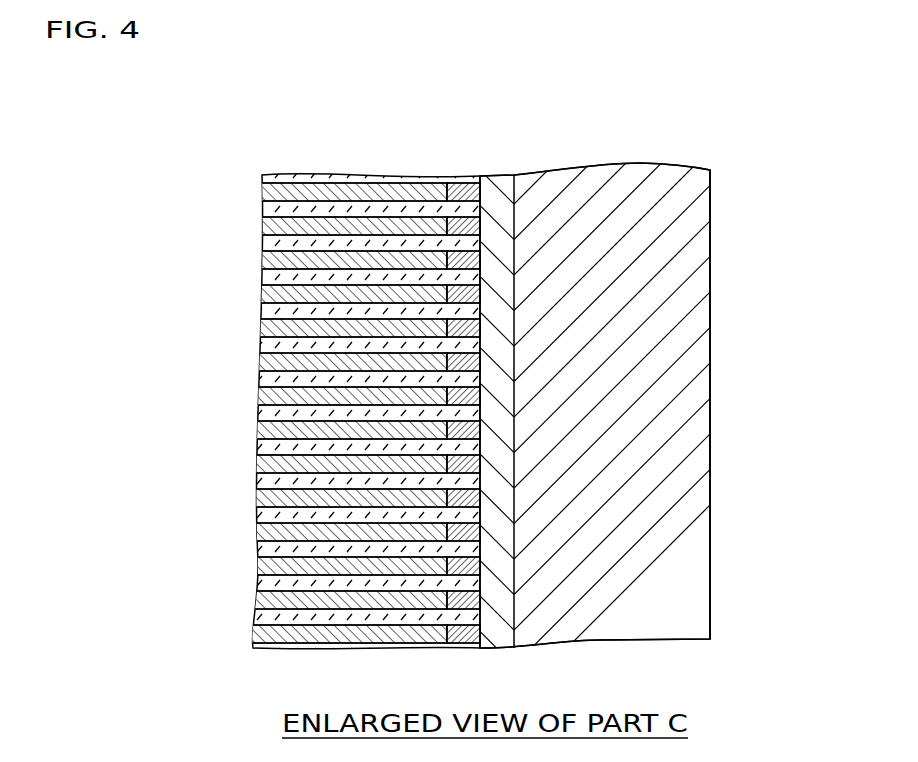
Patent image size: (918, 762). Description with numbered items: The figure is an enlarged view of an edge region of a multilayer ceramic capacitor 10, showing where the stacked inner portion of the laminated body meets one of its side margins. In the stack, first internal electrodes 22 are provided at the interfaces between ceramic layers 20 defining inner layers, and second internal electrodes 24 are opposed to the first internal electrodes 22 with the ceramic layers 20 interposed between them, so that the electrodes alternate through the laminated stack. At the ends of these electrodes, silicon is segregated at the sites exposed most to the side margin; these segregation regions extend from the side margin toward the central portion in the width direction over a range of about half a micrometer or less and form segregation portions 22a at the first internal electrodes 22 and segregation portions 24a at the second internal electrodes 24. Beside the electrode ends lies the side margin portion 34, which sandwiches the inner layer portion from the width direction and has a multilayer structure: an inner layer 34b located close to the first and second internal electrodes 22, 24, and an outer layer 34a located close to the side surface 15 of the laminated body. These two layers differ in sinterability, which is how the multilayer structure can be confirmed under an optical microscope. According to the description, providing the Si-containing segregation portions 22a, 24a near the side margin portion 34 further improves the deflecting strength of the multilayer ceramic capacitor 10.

The multilayer ceramic capacitor 10 is at (251, 103).
The first side surface 15 is at (711, 610).
The ceramic layers 20 is at (280, 316).
The first internal electrodes 22 is at (325, 332).
The segregation portions 22a is at (465, 192).
The second internal electrodes 24 is at (420, 357).
The segregation portions 24a is at (471, 223).
The side margin portion 34 is at (628, 108).
The outer layer 34a is at (590, 185).
The inner layer 34b is at (503, 188).